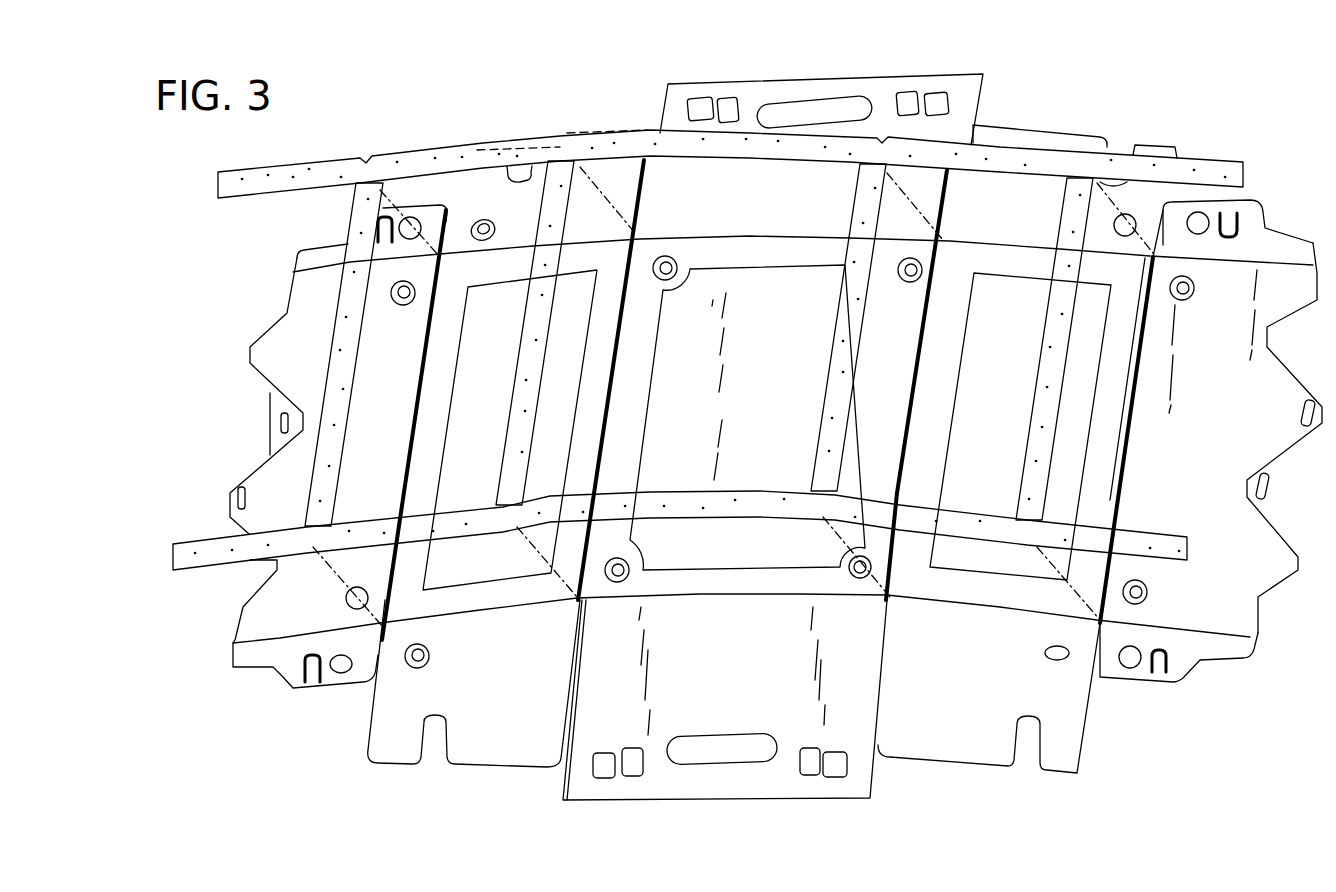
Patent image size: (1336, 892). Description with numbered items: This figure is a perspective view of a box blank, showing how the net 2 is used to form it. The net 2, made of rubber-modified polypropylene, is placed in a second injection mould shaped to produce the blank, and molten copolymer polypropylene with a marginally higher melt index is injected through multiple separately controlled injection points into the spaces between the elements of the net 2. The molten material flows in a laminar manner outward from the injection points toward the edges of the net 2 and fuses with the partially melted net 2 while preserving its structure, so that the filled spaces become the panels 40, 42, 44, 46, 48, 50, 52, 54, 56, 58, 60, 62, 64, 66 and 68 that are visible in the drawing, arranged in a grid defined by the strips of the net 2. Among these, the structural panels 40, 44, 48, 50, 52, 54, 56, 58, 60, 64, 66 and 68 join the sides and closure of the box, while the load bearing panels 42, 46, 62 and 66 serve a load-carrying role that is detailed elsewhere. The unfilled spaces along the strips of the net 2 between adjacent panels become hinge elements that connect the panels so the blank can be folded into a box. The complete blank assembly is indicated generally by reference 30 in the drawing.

The net 2 is at (175, 552).
The carrier assembly 30 is at (449, 810).
The structural panel 40 is at (1258, 233).
The load bearing panel 42 is at (1033, 227).
The structural panel 44 is at (793, 210).
The load bearing panel 46 is at (531, 222).
The structural panel 48 is at (315, 262).
The structural panel 50 is at (1231, 437).
The structural panel 52 is at (1018, 449).
The structural panel 54 is at (761, 393).
The structural panel 56 is at (496, 401).
The structural panel 58 is at (391, 431).
The structural panel 60 is at (1183, 652).
The load bearing panel 62 is at (978, 681).
The structural panel 64 is at (746, 679).
The panel 66 is at (506, 698).
The structural panel 68 is at (285, 680).